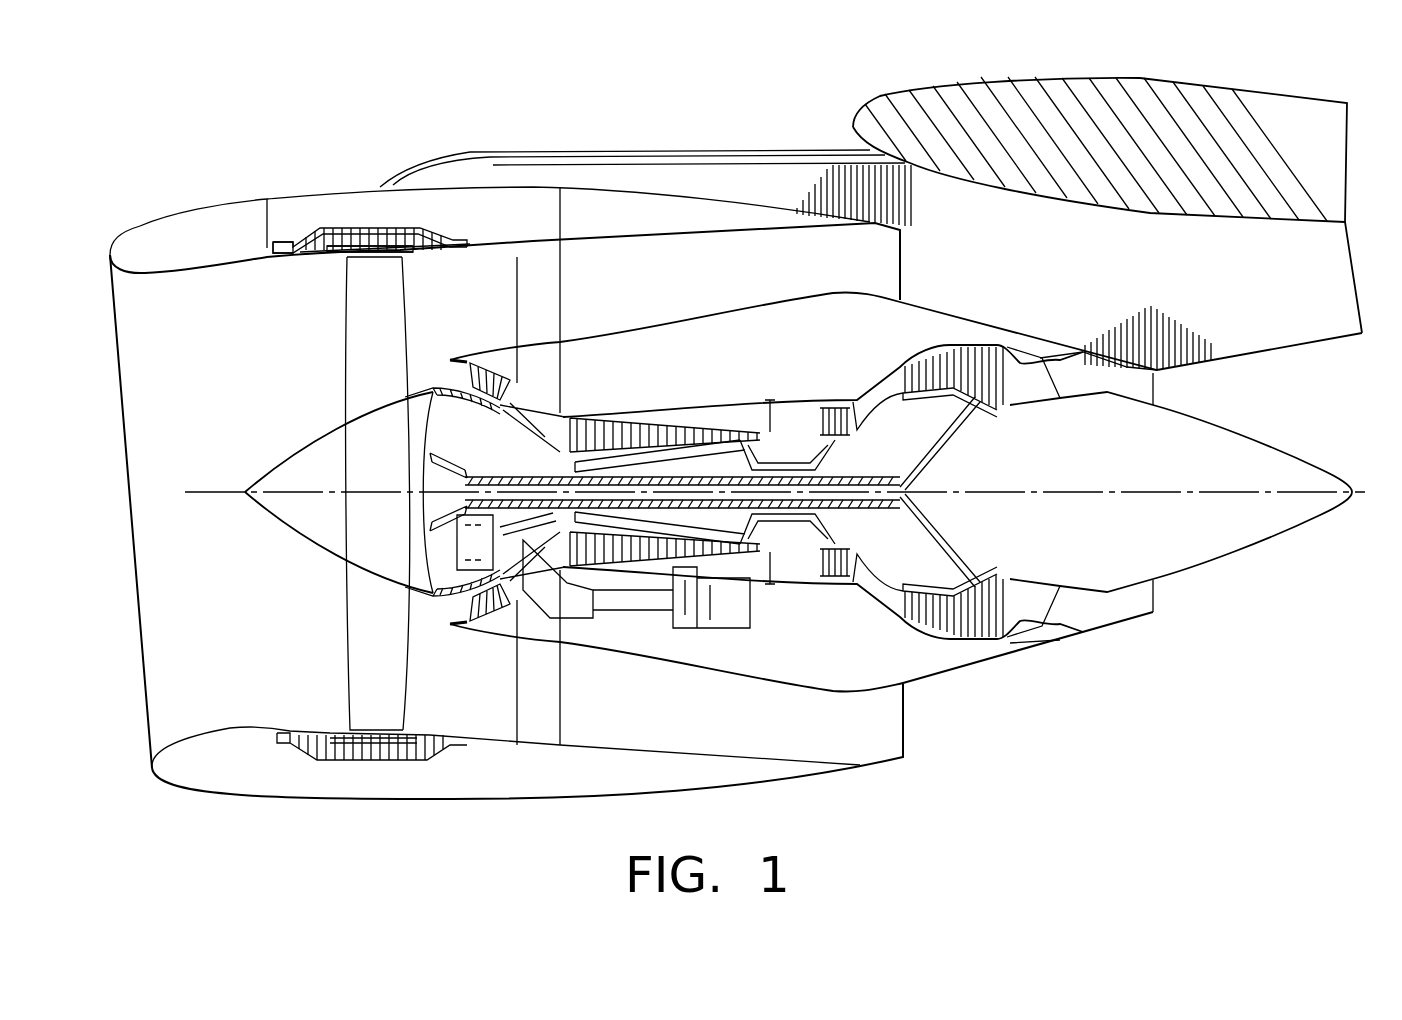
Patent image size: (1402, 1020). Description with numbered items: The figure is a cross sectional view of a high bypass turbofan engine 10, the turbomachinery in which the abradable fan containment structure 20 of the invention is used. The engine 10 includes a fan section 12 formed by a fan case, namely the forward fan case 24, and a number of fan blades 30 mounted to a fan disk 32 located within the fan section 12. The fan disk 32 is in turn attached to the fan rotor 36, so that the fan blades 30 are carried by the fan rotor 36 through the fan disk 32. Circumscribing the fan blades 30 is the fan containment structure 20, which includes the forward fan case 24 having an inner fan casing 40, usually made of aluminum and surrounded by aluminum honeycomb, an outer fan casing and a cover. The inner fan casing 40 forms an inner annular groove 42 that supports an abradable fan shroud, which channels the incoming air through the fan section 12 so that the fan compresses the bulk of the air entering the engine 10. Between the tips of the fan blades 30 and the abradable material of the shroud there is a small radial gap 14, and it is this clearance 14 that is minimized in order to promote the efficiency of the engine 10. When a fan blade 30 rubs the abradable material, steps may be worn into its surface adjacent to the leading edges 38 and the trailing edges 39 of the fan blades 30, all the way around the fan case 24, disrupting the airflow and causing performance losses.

The high bypass turbofan engine 10 is at (343, 128).
The fan section 12 is at (347, 187).
The radial gap 14 is at (408, 260).
The fan containment structure 20 is at (294, 224).
The forward fan case 24 is at (377, 238).
The fan blades 30 is at (357, 383).
The fan disk 32 is at (333, 538).
The fan rotor 36 is at (537, 477).
The leading edges 38 is at (343, 337).
The trailing edges 39 is at (410, 320).
The inner fan casing 40 is at (282, 253).
The inner annular groove 42 is at (358, 253).